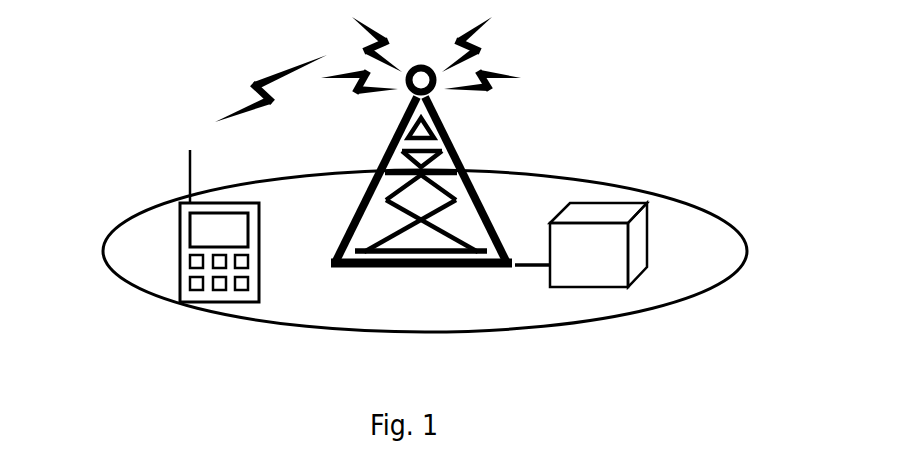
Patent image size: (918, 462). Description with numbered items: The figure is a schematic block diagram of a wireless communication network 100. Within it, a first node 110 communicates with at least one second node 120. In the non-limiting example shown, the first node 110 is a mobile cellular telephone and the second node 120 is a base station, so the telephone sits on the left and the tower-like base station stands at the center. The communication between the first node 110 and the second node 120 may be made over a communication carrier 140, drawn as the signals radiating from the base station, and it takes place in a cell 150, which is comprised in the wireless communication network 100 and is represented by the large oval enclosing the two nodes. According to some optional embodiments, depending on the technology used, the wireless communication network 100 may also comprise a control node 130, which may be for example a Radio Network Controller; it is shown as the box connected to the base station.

The wireless communication network 100 is at (703, 69).
The first node 110 is at (177, 232).
The second node 120 is at (452, 133).
The control node 130 is at (617, 270).
The communication carrier 140 is at (273, 78).
The cell 150 is at (695, 248).